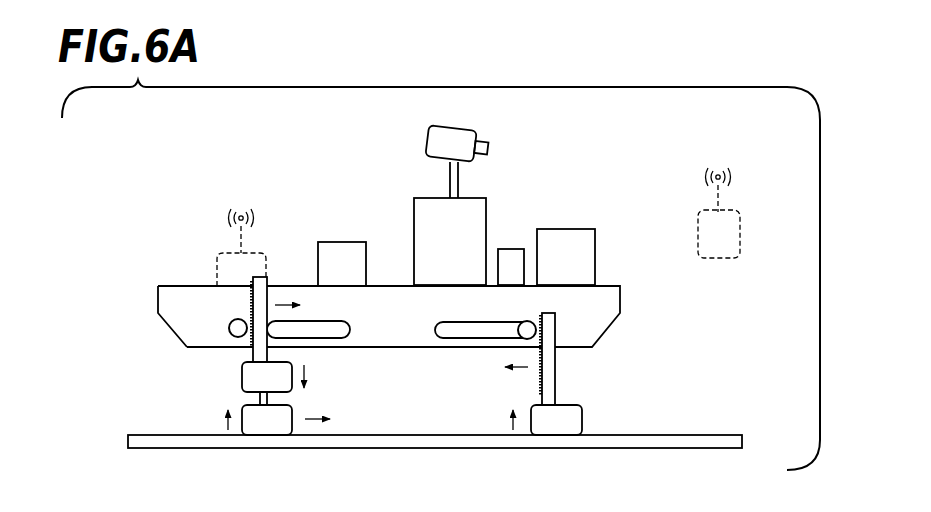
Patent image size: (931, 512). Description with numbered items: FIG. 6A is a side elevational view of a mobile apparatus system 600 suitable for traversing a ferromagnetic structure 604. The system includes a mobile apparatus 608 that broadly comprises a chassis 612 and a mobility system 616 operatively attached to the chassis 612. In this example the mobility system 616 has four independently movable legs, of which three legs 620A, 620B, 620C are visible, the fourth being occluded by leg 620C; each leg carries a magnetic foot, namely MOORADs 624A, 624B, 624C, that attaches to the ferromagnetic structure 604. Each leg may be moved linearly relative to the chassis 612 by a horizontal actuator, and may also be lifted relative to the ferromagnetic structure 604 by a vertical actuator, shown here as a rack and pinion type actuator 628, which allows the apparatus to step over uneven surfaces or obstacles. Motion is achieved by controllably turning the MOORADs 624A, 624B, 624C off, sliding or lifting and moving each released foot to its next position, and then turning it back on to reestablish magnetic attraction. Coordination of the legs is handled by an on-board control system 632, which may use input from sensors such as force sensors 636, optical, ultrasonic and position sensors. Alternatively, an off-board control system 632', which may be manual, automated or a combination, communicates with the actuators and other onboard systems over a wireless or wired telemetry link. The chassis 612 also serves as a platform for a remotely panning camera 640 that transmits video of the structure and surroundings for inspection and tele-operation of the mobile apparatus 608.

The mobile apparatus system 600 is at (757, 169).
The ferromagnetic structure 604 is at (233, 448).
The mobile apparatus 608 is at (641, 309).
The chassis 612 is at (187, 308).
The mobility system 616 is at (591, 368).
The leg 620A is at (253, 350).
The leg 620B is at (258, 399).
The leg 620C is at (548, 390).
The MOORAD 624A is at (293, 392).
The MOORAD 624B is at (293, 410).
The MOORAD 624C is at (552, 426).
The rack and pinion type actuator 628 is at (237, 310).
The on-board control system 632 is at (344, 223).
The off-board control system 632' is at (686, 209).
The force sensor 636 is at (567, 235).
The remotely panning camera 640 is at (433, 138).